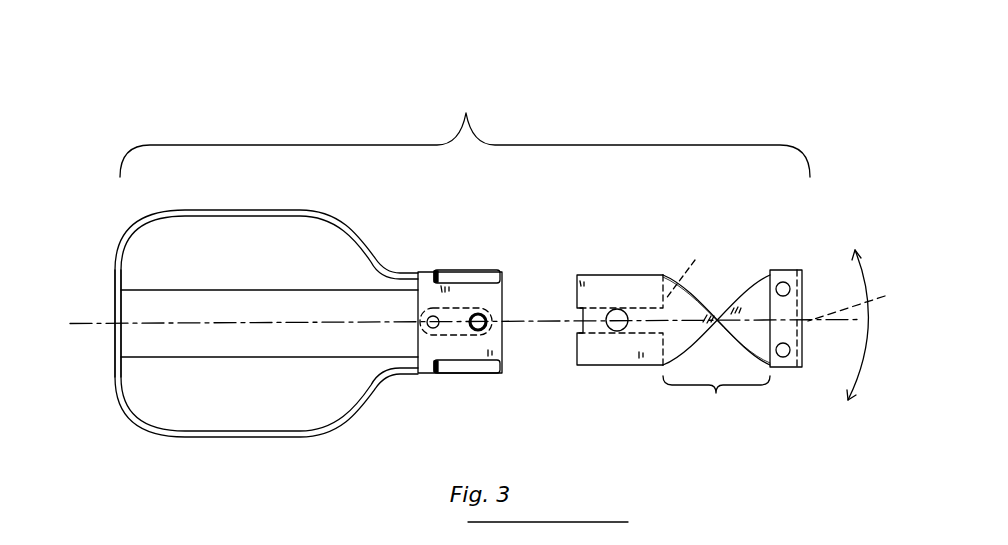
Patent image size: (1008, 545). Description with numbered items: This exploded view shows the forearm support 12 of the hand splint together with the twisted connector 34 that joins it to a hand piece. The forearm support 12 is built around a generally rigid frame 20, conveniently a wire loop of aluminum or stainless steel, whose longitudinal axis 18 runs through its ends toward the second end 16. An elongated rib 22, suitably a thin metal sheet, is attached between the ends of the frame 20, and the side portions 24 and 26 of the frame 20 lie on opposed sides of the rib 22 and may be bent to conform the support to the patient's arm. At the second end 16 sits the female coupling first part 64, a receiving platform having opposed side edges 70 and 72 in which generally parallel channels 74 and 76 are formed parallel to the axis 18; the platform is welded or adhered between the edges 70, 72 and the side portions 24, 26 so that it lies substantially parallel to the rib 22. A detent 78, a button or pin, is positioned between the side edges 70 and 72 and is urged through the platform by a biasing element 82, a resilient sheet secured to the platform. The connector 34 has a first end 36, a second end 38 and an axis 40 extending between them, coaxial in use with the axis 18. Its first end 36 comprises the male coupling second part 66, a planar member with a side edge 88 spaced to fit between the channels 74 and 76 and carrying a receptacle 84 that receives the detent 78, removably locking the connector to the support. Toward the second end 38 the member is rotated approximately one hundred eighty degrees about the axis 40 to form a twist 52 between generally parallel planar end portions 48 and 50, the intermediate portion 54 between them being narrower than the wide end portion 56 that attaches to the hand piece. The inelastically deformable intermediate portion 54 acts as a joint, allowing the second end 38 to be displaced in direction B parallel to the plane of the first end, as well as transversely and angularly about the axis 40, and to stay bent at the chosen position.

The forearm support 12 is at (317, 436).
The second end 16 is at (503, 306).
The longitudinal axis 18 is at (115, 322).
The frame 20 is at (344, 231).
The elongated rib 22 is at (239, 320).
The side portion 24 is at (190, 218).
The side portion 26 is at (257, 437).
The connector 34 is at (673, 398).
The first end 36 is at (577, 284).
The second end 38 is at (803, 328).
The axis 40 is at (855, 301).
The planar end portion 48 is at (696, 265).
The planar end portion 50 is at (770, 288).
The twist 52 is at (717, 322).
The intermediate portion 54 is at (716, 349).
The end portion 56 is at (783, 370).
The coupling first part 64 is at (438, 270).
The coupling second part 66 is at (593, 277).
The side edge 70 is at (458, 373).
The side edge 72 is at (453, 268).
The channel 74 is at (503, 367).
The channel 76 is at (503, 271).
The detent 78 is at (484, 330).
The biasing element 82 is at (433, 335).
The receptacle 84 is at (613, 331).
The side edge 88 is at (633, 275).
The direction B is at (870, 338).